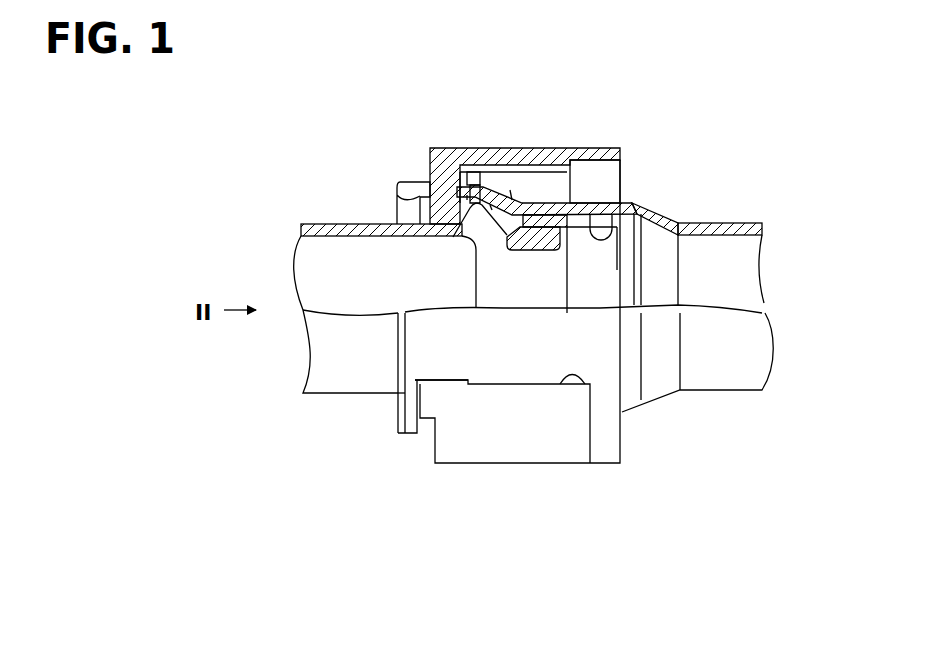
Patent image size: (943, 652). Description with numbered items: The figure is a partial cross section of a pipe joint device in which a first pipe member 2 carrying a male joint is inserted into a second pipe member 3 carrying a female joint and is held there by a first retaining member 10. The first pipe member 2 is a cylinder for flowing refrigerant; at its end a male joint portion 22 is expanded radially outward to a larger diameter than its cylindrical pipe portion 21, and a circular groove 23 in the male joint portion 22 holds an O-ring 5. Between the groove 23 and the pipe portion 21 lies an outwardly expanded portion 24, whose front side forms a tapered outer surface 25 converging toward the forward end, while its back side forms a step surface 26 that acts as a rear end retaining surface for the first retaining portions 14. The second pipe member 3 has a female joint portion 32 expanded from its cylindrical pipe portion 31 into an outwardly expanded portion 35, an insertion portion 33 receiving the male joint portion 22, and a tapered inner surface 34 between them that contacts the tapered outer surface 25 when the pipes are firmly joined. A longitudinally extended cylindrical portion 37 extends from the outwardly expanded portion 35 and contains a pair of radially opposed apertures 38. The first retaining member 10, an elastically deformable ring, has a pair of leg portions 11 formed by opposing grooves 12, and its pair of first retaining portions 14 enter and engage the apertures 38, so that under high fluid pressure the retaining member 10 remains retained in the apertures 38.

The first pipe member 2 is at (287, 208).
The cylindrical pipe portion 21 is at (322, 223).
The circular groove 23 is at (505, 240).
The tapered outer surface 25 is at (473, 243).
The second pipe member 3 is at (730, 212).
The cylindrical pipe portion 31 is at (762, 222).
The female joint portion 32 is at (583, 193).
The insertion portion 33 is at (640, 204).
The first retaining member 10 is at (590, 140).
The leg portions 11 is at (540, 175).
The grooves 12 is at (585, 240).
The male joint portion 22 is at (601, 245).
The O-ring 5 is at (545, 252).
The longitudinally extended cylindrical portion 37 is at (402, 182).
The step surface 26 is at (425, 185).
The first retaining portions 14 is at (455, 200).
The apertures 38 is at (472, 190).
The outwardly expanded portion 24 is at (467, 195).
The outwardly expanded portion 35 is at (490, 205).
The tapered inner surface 34 is at (510, 190).